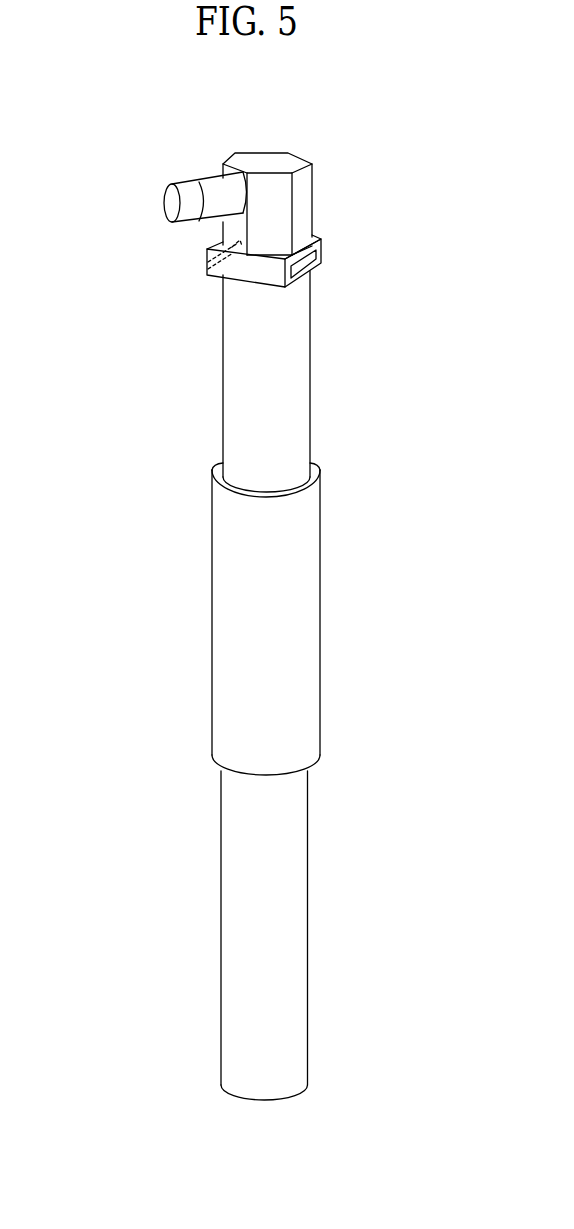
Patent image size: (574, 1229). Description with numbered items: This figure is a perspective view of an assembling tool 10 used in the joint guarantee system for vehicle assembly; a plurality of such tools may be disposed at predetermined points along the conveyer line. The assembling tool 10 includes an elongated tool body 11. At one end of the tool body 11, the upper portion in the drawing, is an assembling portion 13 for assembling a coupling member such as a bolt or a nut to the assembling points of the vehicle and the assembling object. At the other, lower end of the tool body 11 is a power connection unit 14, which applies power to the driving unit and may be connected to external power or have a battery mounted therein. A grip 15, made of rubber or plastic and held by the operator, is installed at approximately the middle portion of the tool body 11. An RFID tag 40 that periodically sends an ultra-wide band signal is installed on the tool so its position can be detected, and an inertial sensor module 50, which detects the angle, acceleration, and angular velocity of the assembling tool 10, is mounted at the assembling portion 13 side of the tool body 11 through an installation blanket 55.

The assembling tool 10 is at (277, 98).
The tool body 11 is at (222, 422).
The assembling portion 13 is at (171, 203).
The power connection unit 14 is at (220, 928).
The grip 15 is at (313, 617).
The RFID tag 40 is at (206, 252).
The inertial sensor module 50 is at (324, 266).
The installation blanket 55 is at (325, 245).